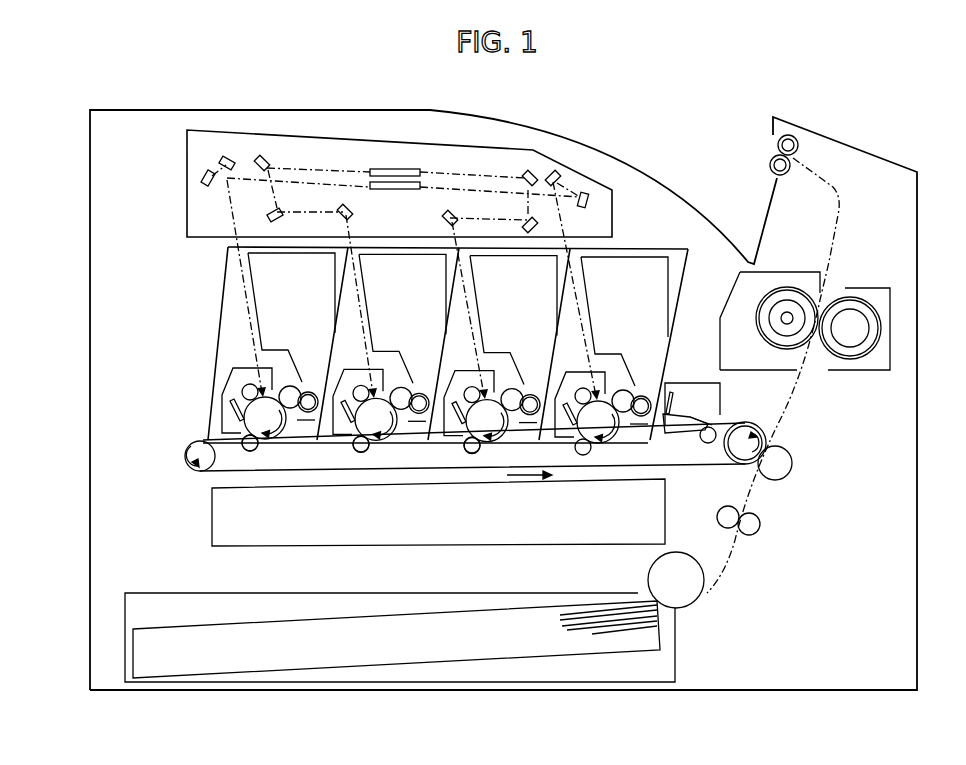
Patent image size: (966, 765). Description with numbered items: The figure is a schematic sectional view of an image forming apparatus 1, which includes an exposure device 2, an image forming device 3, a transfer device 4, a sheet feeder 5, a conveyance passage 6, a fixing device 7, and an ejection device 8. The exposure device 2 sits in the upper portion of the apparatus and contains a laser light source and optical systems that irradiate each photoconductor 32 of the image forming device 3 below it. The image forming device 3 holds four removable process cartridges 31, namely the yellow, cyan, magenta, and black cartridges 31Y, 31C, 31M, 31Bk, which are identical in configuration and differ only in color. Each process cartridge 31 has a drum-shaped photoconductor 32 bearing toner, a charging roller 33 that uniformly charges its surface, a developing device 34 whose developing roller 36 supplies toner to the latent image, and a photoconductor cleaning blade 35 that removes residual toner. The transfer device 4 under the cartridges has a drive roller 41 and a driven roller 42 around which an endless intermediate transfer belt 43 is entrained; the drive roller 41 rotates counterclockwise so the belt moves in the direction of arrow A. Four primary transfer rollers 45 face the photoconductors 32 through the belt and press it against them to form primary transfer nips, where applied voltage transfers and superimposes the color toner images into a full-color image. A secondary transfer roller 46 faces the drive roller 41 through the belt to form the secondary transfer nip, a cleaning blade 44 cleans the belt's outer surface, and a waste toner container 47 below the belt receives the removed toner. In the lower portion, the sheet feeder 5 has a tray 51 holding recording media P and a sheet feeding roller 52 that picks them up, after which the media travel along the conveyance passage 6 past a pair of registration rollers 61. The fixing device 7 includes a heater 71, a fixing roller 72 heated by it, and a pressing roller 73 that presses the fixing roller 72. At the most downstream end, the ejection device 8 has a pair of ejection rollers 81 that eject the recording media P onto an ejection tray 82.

The image forming apparatus 1 is at (90, 368).
The exposure device 2 is at (187, 185).
The image forming device 3 is at (431, 274).
The transfer device 4 is at (501, 467).
The sheet feeder 5 is at (409, 633).
The conveyance passage 6 is at (843, 200).
The fixing device 7 is at (831, 301).
The ejection device 8 is at (692, 136).
The process cartridge 31 is at (466, 274).
The black process cartridge 31Bk is at (297, 247).
The magenta process cartridge 31M is at (430, 247).
The cyan process cartridge 31C is at (513, 247).
The yellow process cartridge 31Y is at (618, 303).
The photoconductor 32 is at (630, 441).
The charging roller 33 is at (581, 388).
The developing device 34 is at (657, 286).
The photoconductor cleaning blade 35 is at (562, 400).
The developing roller 36 is at (626, 390).
The drive roller 41 is at (745, 421).
The driven roller 42 is at (204, 473).
The intermediate transfer belt 43 is at (301, 478).
The cleaning blade 44 is at (693, 382).
The primary transfer roller 45 is at (580, 502).
The secondary transfer roller 46 is at (793, 463).
The waste toner container 47 is at (437, 546).
The tray 51 is at (221, 592).
The sheet feeding roller 52 is at (648, 580).
The registration rollers 61 is at (752, 512).
The heater 71 is at (788, 312).
The fixing roller 72 is at (756, 335).
The pressing roller 73 is at (850, 297).
The ejection rollers 81 is at (770, 162).
The ejection tray 82 is at (592, 160).
The arrow A is at (529, 487).
The recording media P is at (462, 652).